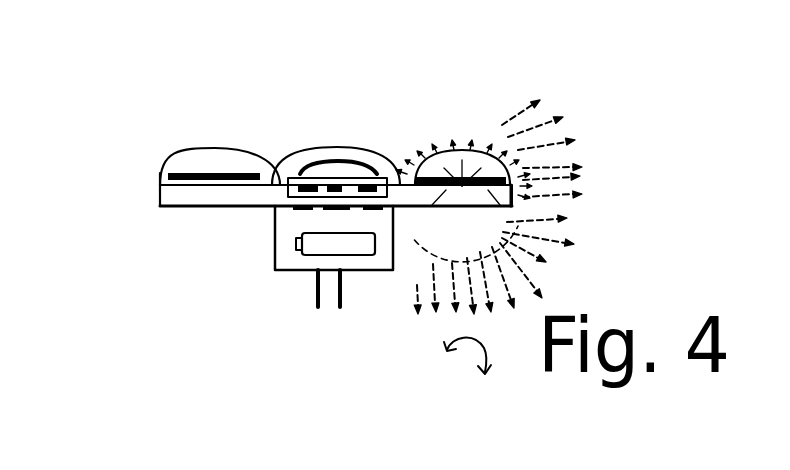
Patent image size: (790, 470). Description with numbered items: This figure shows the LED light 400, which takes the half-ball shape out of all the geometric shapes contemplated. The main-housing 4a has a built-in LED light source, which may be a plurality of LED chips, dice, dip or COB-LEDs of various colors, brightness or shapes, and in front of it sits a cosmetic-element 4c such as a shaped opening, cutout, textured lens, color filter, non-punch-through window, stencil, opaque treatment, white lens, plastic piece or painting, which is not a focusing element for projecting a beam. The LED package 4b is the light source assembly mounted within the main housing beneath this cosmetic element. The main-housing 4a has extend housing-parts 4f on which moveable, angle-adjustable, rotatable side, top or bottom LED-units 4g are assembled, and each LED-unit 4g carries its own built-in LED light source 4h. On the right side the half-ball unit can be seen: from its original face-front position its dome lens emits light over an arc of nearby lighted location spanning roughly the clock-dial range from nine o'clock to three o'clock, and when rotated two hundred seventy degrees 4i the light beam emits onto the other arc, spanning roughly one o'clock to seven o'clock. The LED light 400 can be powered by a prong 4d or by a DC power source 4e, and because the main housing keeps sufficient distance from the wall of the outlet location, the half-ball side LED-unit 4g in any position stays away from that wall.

The LED light 400 is at (545, 34).
The main-housing 4a is at (397, 174).
The LED package 4b is at (341, 180).
The front cosmetic-element 4c is at (351, 162).
The prong 4d is at (338, 304).
The DC power source 4e is at (310, 250).
The extend housing-parts 4f is at (185, 192).
The side LED-unit 4g is at (176, 170).
The LED light source 4h is at (216, 172).
The 270 degree rotation 4i is at (437, 362).